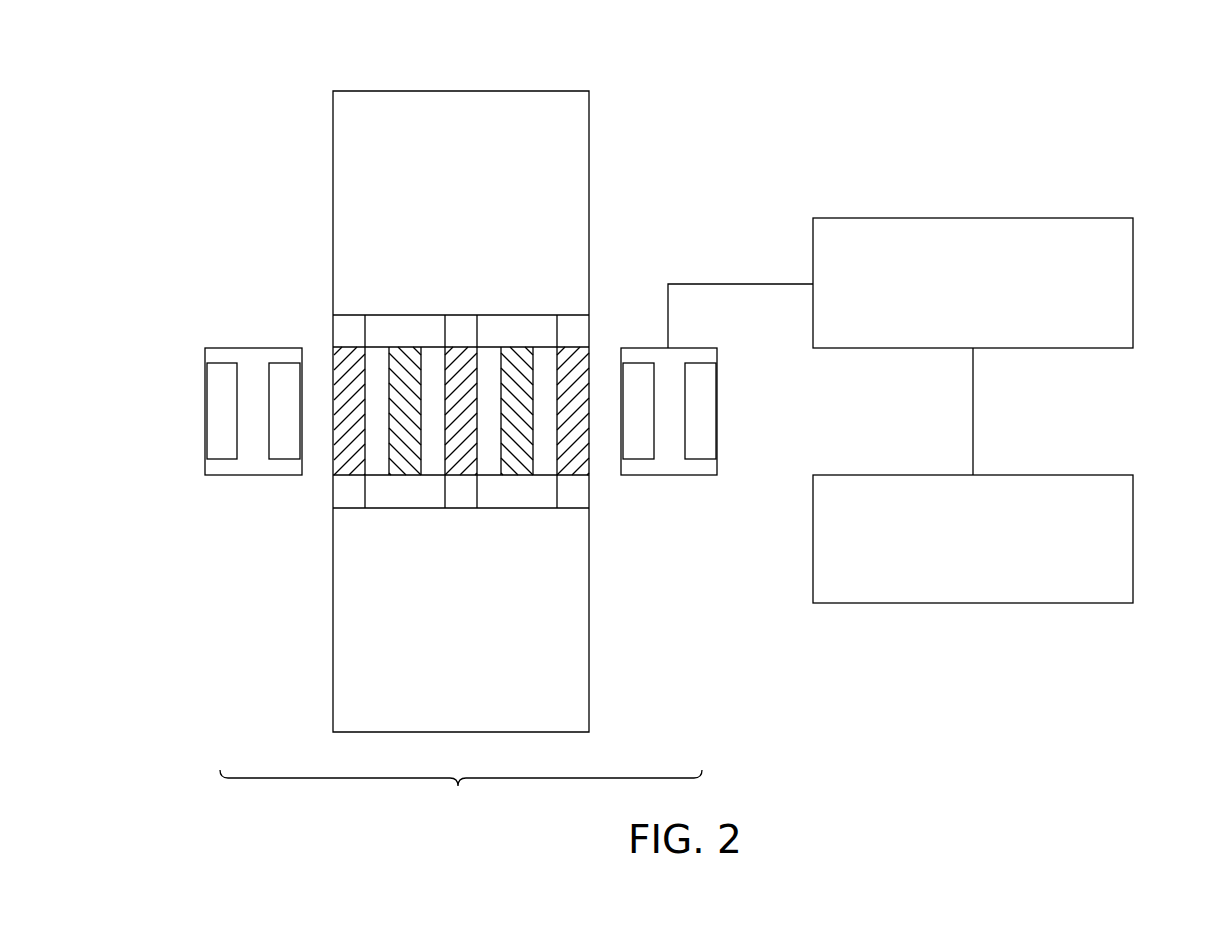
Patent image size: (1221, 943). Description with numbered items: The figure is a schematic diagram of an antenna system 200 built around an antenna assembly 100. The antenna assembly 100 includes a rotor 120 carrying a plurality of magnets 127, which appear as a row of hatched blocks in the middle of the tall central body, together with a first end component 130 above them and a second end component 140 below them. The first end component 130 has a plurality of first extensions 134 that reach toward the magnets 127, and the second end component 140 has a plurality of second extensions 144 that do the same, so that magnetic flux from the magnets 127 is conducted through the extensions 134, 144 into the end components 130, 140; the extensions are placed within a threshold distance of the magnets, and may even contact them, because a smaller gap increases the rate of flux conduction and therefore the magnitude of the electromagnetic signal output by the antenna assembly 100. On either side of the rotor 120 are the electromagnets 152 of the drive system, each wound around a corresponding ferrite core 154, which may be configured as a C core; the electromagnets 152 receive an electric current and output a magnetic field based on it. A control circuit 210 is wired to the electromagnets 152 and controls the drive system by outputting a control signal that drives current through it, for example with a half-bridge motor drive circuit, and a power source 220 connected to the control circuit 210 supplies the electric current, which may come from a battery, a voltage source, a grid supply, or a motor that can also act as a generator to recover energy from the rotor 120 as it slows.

The antenna assembly 100 is at (461, 793).
The rotor 120 is at (327, 432).
The plurality of magnets 127 is at (333, 360).
The first end component 130 is at (463, 91).
The plurality of first extensions 134 is at (460, 315).
The second end component 140 is at (557, 732).
The plurality of second extensions 144 is at (460, 508).
The electromagnets 152 is at (205, 403).
The ferrite cores 154 is at (253, 347).
The antenna system 200 is at (1098, 75).
The control circuit 210 is at (1072, 218).
The power source 220 is at (1072, 475).